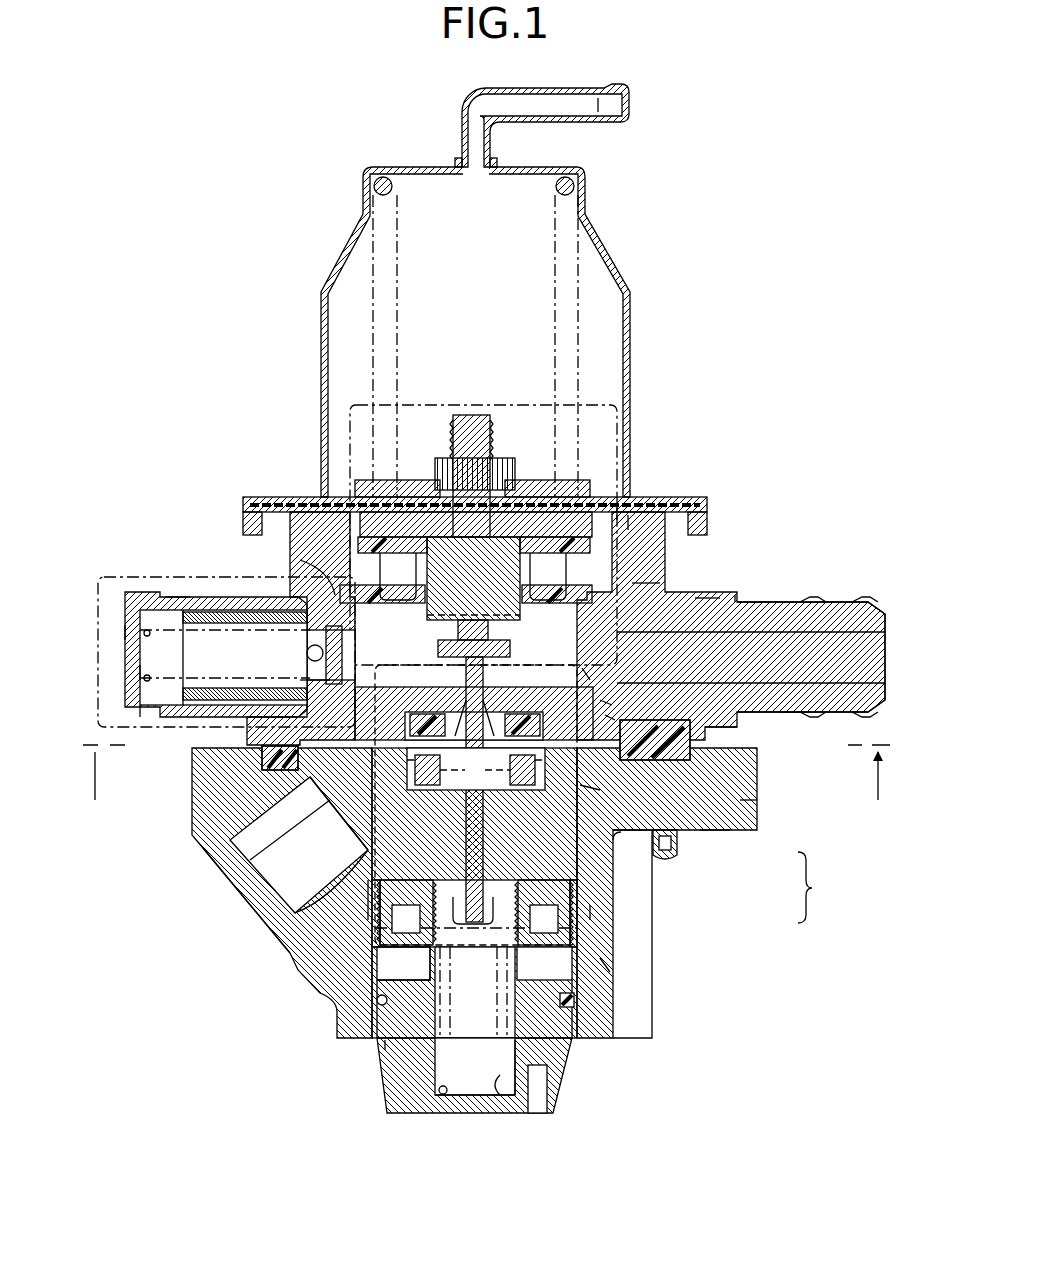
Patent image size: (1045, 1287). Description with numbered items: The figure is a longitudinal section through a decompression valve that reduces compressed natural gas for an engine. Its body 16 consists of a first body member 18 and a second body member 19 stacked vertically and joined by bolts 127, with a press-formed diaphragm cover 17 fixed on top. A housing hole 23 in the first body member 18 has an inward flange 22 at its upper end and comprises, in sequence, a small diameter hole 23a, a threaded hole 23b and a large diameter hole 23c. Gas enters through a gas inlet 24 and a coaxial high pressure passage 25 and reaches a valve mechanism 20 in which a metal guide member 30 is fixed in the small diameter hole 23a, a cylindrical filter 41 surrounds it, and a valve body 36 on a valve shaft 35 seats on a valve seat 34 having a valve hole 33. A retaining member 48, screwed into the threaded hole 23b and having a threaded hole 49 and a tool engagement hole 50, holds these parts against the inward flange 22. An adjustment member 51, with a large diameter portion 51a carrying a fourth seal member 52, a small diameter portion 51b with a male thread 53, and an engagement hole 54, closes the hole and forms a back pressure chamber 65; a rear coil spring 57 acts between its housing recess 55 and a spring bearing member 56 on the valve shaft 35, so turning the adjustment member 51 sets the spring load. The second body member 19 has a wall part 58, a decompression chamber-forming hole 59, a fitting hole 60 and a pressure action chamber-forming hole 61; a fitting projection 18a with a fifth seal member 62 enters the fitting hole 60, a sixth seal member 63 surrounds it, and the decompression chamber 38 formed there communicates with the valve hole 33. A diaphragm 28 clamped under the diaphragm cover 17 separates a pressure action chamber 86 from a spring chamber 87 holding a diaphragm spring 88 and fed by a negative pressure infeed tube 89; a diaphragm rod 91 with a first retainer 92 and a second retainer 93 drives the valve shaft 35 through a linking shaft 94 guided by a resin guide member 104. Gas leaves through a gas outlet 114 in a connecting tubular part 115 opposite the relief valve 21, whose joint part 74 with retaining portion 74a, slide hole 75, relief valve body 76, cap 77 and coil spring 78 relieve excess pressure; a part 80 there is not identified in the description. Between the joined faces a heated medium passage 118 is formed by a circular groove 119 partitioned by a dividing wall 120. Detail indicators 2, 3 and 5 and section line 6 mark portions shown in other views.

The pressure regulating valve 2 is at (365, 920).
The diaphragm actuator 3 is at (626, 403).
The inlet fitting section 5 is at (150, 575).
The section line 6 is at (486, 797).
The body 16 is at (820, 887).
The diaphragm cover 17 is at (630, 322).
The first body member 18 is at (712, 828).
The fitting projection 18a is at (300, 684).
The second body member 19 is at (757, 805).
The valve mechanism 20 is at (618, 845).
The relief valve 21 is at (226, 595).
The inward flange 22 is at (582, 668).
The housing hole 23 is at (600, 990).
The small diameter hole 23a is at (582, 786).
The threaded hole 23b is at (592, 908).
The large diameter hole 23c is at (388, 1025).
The gas inlet 24 is at (235, 848).
The high pressure passage 25 is at (352, 813).
The diaphragm 28 is at (617, 505).
The guide member 30 is at (350, 866).
The valve hole 33 is at (500, 690).
The valve seat 34 is at (466, 700).
The valve shaft 35 is at (470, 925).
The valve body 36 is at (414, 724).
The decompression chamber 38 is at (388, 652).
The cylindrical filter 41 is at (342, 790).
The retaining member 48 is at (365, 900).
The threaded hole 49 is at (428, 955).
The engagement hole 50 is at (600, 963).
The adjustment member 51 is at (460, 1118).
The large diameter portion 51a is at (513, 1105).
The small diameter portion 51b is at (512, 892).
The fourth seal member 52 is at (575, 1005).
The male thread 53 is at (545, 970).
The engagement hole 54 is at (550, 1092).
The housing recess 55 is at (500, 1080).
The spring bearing member 56 is at (388, 1001).
The rear coil spring 57 is at (440, 1096).
The wall part 58 is at (632, 583).
The decompression chamber-forming hole 59 is at (300, 560).
The fitting hole 60 is at (603, 700).
The pressure action chamber-forming hole 61 is at (630, 520).
The fifth seal member 62 is at (608, 716).
The sixth seal member 63 is at (645, 765).
The back pressure chamber 65 is at (440, 892).
The joint part 74 is at (188, 597).
The retaining portion 74a is at (176, 596).
The slide hole 75 is at (150, 672).
The relief valve body 76 is at (210, 700).
The cap 77 is at (140, 717).
The coil spring 78 is at (126, 630).
The check valve ball 80 is at (308, 653).
The pressure action chamber 86 is at (340, 487).
The spring chamber 87 is at (462, 308).
The diaphragm spring 88 is at (393, 190).
The negative pressure infeed tube 89 is at (592, 122).
The diaphragm rod 91 is at (498, 470).
The first retainer 92 is at (282, 507).
The second retainer 93 is at (405, 500).
The linking shaft 94 is at (535, 548).
The guide member 104 is at (695, 598).
The gas outlet 114 is at (782, 645).
The connecting tubular part 115 is at (795, 712).
The heated medium passage 118 is at (282, 770).
The circular groove 119 is at (735, 600).
The dividing wall 120 is at (712, 735).
The bolts 127 is at (668, 860).